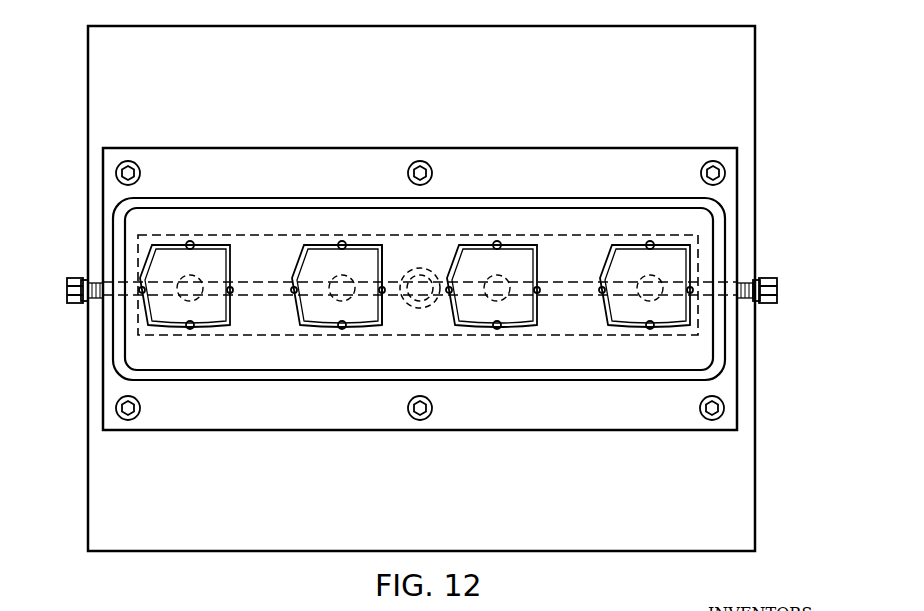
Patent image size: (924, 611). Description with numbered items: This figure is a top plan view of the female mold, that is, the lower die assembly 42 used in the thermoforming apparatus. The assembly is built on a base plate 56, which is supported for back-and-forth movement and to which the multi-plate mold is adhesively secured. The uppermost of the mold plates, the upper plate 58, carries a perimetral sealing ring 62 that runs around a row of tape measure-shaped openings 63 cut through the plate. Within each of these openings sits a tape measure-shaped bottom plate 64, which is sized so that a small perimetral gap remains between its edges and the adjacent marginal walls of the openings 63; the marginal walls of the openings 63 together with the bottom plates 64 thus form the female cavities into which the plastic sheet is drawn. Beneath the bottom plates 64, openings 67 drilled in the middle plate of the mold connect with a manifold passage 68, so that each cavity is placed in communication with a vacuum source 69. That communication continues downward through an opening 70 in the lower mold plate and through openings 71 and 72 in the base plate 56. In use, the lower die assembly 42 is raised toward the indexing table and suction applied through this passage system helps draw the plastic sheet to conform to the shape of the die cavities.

The lower die assembly 42 is at (772, 168).
The base plate 56 is at (745, 97).
The upper plate 58 is at (636, 160).
The perimetral sealing ring 62 is at (517, 200).
The tape measure-shaped openings 63 is at (387, 268).
The tape measure-shaped bottom plates 64 is at (357, 268).
The openings 67 is at (541, 290).
The manifold passage 68 is at (447, 335).
The vacuum source 69 is at (68, 296).
The opening 70 is at (401, 307).
The opening 71 is at (417, 310).
The opening 72 is at (270, 300).